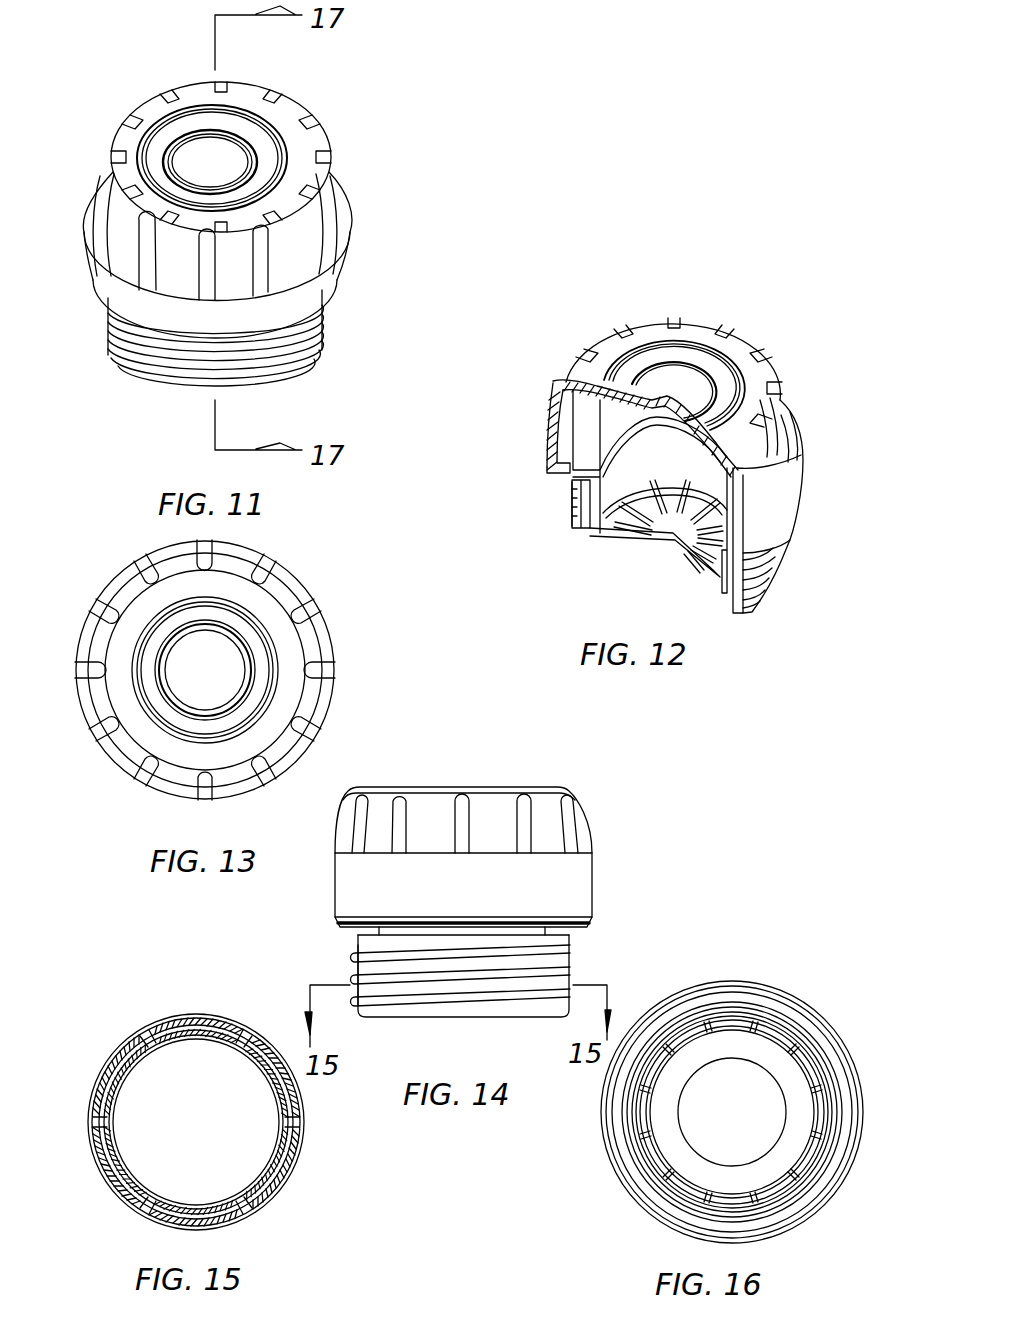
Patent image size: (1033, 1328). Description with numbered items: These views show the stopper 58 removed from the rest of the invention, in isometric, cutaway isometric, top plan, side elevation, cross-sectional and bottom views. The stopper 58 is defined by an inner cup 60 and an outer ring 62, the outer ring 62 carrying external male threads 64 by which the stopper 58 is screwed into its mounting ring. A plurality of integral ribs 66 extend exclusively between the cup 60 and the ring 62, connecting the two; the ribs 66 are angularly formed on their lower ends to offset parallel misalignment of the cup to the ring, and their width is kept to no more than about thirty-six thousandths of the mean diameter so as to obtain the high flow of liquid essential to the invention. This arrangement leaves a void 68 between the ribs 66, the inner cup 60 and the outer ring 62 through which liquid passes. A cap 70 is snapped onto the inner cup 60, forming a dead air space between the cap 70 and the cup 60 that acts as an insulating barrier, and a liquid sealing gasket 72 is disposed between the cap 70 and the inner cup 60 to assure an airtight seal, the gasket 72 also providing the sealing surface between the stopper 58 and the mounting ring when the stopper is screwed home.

In FIG. 11, the stopper 58 is at (336, 143).
In FIG. 12, the stopper 58 is at (712, 308).
In FIG. 13, the stopper 58 is at (115, 772).
In FIG. 14, the stopper 58 is at (605, 862).
In FIG. 16, the stopper 58 is at (802, 994).
In FIG. 16, the inner cup 60 is at (668, 1152).
In FIG. 11, the outer ring 62 is at (134, 362).
In FIG. 12, the outer ring 62 is at (575, 534).
In FIG. 14, the outer ring 62 is at (355, 948).
In FIG. 12, the external male threads 64 is at (762, 592).
In FIG. 14, the external male threads 64 is at (572, 950).
In FIG. 12, the ribs 66 is at (618, 533).
In FIG. 15, the ribs 66 is at (148, 1040).
In FIG. 15, the void 68 is at (205, 975).
In FIG. 11, the cap 70 is at (140, 110).
In FIG. 12, the cap 70 is at (600, 340).
In FIG. 13, the cap 70 is at (333, 690).
In FIG. 14, the cap 70 is at (470, 790).
In FIG. 12, the liquid sealing gasket 72 is at (555, 478).